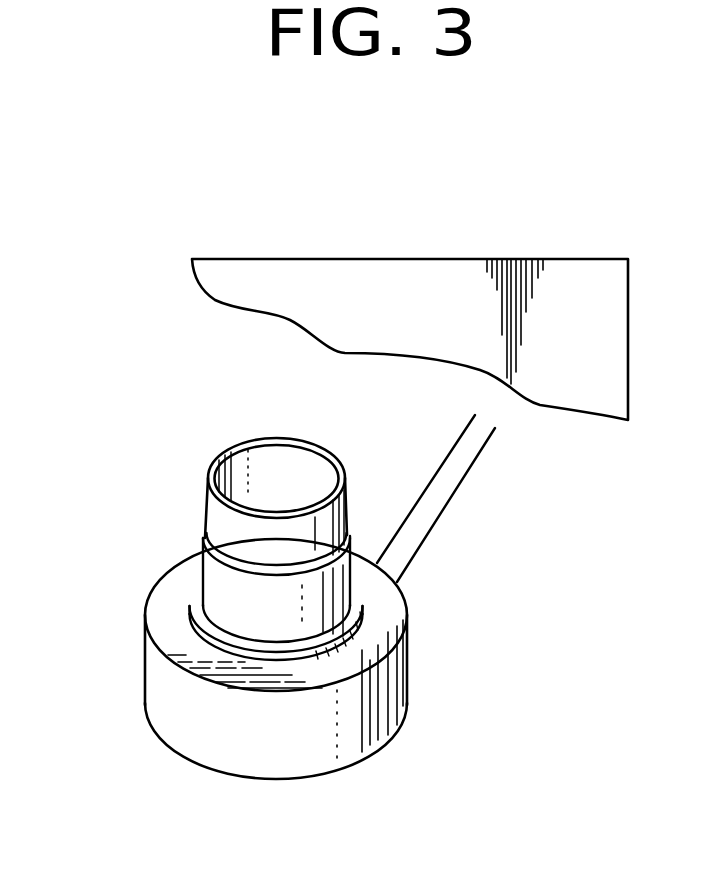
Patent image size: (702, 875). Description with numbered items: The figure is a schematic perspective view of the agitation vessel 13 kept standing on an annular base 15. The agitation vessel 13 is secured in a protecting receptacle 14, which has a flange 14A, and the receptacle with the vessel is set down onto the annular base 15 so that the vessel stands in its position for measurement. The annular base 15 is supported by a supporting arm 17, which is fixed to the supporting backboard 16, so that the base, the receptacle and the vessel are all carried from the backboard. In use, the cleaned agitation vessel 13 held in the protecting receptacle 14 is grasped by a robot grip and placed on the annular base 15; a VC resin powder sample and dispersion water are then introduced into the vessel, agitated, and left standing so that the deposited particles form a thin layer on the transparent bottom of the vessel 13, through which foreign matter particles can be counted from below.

The agitation vessel 13 is at (213, 512).
The protecting receptacle 14 is at (212, 573).
The flange 14A is at (190, 613).
The annular base 15 is at (157, 688).
The supporting backboard 16 is at (470, 275).
The supporting arm 17 is at (442, 485).